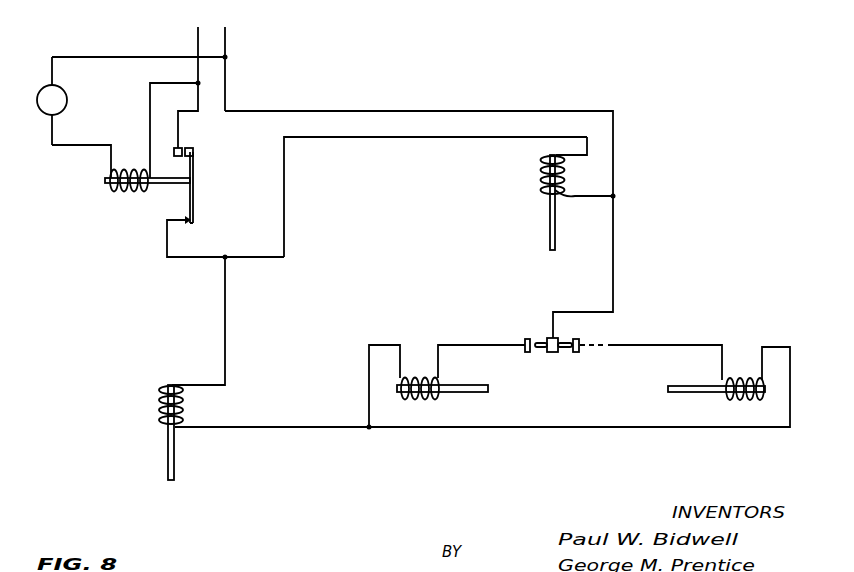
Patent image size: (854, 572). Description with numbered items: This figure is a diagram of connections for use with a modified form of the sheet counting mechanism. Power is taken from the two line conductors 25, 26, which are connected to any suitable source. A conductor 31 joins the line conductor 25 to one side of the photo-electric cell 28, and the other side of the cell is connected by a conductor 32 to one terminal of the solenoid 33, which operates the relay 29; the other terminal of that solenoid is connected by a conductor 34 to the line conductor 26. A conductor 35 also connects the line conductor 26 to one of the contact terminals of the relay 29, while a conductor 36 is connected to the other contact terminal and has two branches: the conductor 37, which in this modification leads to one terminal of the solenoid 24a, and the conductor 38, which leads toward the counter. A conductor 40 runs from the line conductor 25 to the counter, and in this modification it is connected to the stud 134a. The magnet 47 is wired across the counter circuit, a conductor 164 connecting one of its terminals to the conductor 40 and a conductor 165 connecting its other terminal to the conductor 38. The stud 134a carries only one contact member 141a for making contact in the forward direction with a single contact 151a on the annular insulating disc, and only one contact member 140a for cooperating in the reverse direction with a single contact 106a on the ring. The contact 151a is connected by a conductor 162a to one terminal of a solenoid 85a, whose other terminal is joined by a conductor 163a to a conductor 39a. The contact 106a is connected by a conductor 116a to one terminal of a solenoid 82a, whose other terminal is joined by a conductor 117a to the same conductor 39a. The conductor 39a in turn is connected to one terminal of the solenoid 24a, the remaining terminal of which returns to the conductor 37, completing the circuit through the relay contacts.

The line conductor 25 is at (227, 38).
The line conductor 26 is at (196, 37).
The photo-electric cell 28 is at (67, 100).
The relay 29 is at (175, 185).
The conductor 31 is at (82, 57).
The conductor 32 is at (76, 148).
The solenoid 33 is at (133, 196).
The conductor 34 is at (150, 112).
The conductor 35 is at (180, 136).
The conductor 36 is at (190, 258).
The conductor 37 is at (227, 315).
The conductor 38 is at (353, 138).
The conductor 40 is at (388, 111).
The magnet 47 is at (545, 180).
The conductor 164 is at (580, 200).
The conductor 165 is at (581, 160).
The solenoid 24a is at (160, 402).
The conductor 39a is at (276, 432).
The solenoid 82a is at (402, 400).
The solenoid 85a is at (728, 405).
The contact 106a is at (528, 338).
The conductor 116a is at (480, 350).
The conductor 117a is at (368, 372).
The stud 134a is at (553, 353).
The contact member 140a is at (541, 353).
The contact member 141a is at (566, 353).
The contact 151a is at (582, 336).
The conductor 162a is at (601, 348).
The conductor 163a is at (432, 429).